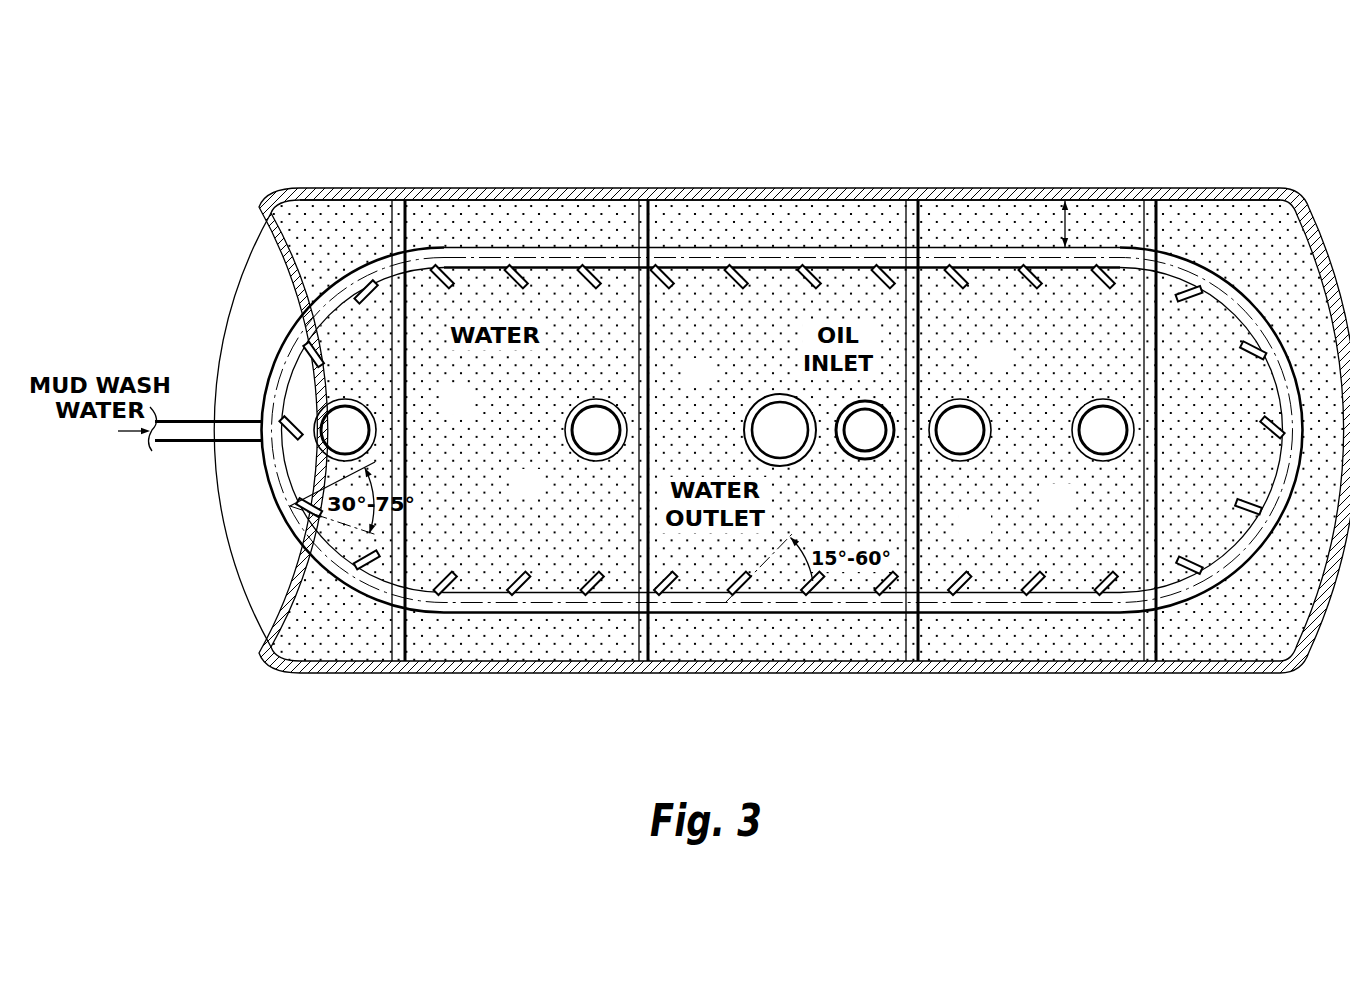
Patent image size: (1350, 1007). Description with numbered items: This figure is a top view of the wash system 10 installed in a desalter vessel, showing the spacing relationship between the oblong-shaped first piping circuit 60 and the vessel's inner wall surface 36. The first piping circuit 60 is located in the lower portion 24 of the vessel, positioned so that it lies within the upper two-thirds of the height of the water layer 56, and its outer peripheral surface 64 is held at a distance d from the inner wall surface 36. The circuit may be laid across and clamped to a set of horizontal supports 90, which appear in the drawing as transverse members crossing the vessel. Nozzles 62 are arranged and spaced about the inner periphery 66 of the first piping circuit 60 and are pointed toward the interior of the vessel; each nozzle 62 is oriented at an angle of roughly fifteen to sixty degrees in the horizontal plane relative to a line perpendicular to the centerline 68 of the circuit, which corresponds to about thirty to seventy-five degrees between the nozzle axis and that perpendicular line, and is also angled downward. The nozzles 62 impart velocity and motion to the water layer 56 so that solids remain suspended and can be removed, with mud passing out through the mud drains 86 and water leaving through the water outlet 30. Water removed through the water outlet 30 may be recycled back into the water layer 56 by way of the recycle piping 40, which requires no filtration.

The system 10 is at (970, 240).
The lower portion of vessel 24 is at (215, 592).
The water outlet 30 is at (766, 416).
The inner wall surface of vessel 36 is at (312, 203).
The recycle piping 40 is at (181, 443).
The water layer 56 is at (265, 270).
The first piping circuit 60 is at (352, 582).
The nozzles 62 is at (1105, 585).
The outer peripheral surface of first piping circuit 64 is at (565, 248).
The inner periphery of first piping circuit 66 is at (566, 577).
The centerline of first piping circuit 68 is at (786, 253).
The mud drains 86 is at (352, 430).
The horizontal supports 90 is at (402, 232).
The distance d is at (1067, 214).